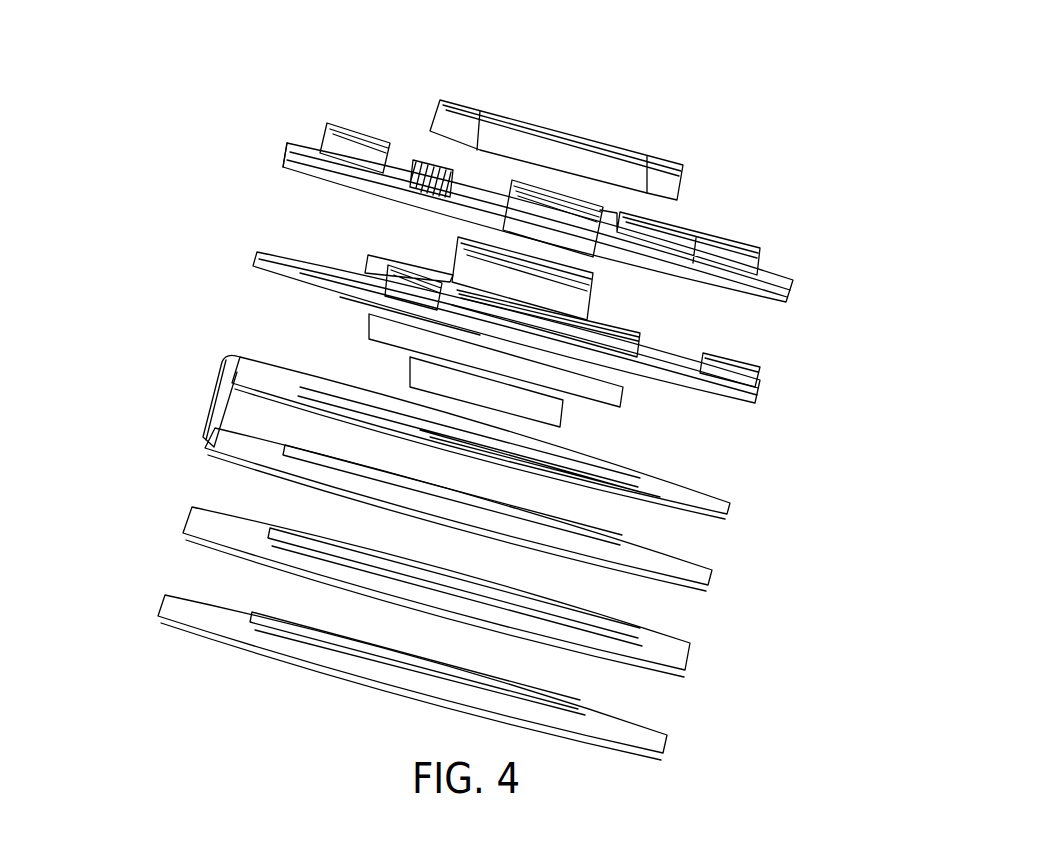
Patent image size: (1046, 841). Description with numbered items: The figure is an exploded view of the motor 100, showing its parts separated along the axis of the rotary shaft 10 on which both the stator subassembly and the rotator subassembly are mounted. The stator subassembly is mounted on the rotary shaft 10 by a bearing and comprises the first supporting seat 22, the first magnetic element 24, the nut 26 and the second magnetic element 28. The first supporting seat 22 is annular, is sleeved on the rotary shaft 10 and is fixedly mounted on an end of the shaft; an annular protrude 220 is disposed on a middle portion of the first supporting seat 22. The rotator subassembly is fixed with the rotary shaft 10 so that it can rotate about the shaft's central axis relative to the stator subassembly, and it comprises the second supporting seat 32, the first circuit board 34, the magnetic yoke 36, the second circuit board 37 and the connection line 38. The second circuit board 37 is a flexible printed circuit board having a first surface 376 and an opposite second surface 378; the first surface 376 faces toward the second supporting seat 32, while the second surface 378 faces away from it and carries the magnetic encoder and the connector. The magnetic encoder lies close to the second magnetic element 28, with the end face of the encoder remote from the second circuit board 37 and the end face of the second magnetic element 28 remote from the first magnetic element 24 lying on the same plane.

The motor 100 is at (747, 108).
The second magnetic element 28 is at (435, 120).
The nut 26 is at (450, 157).
The second circuit board 37 is at (533, 183).
The first surface 376 is at (283, 163).
The second surface 378 is at (306, 140).
The rotary shaft 10 is at (458, 245).
The second supporting seat 32 is at (758, 385).
The connection line 38 is at (212, 385).
The magnetic yoke 36 is at (506, 395).
The first circuit board 34 is at (710, 566).
The first magnetic element 24 is at (185, 518).
The first supporting seat 22 is at (418, 634).
The annular protrude 220 is at (573, 692).